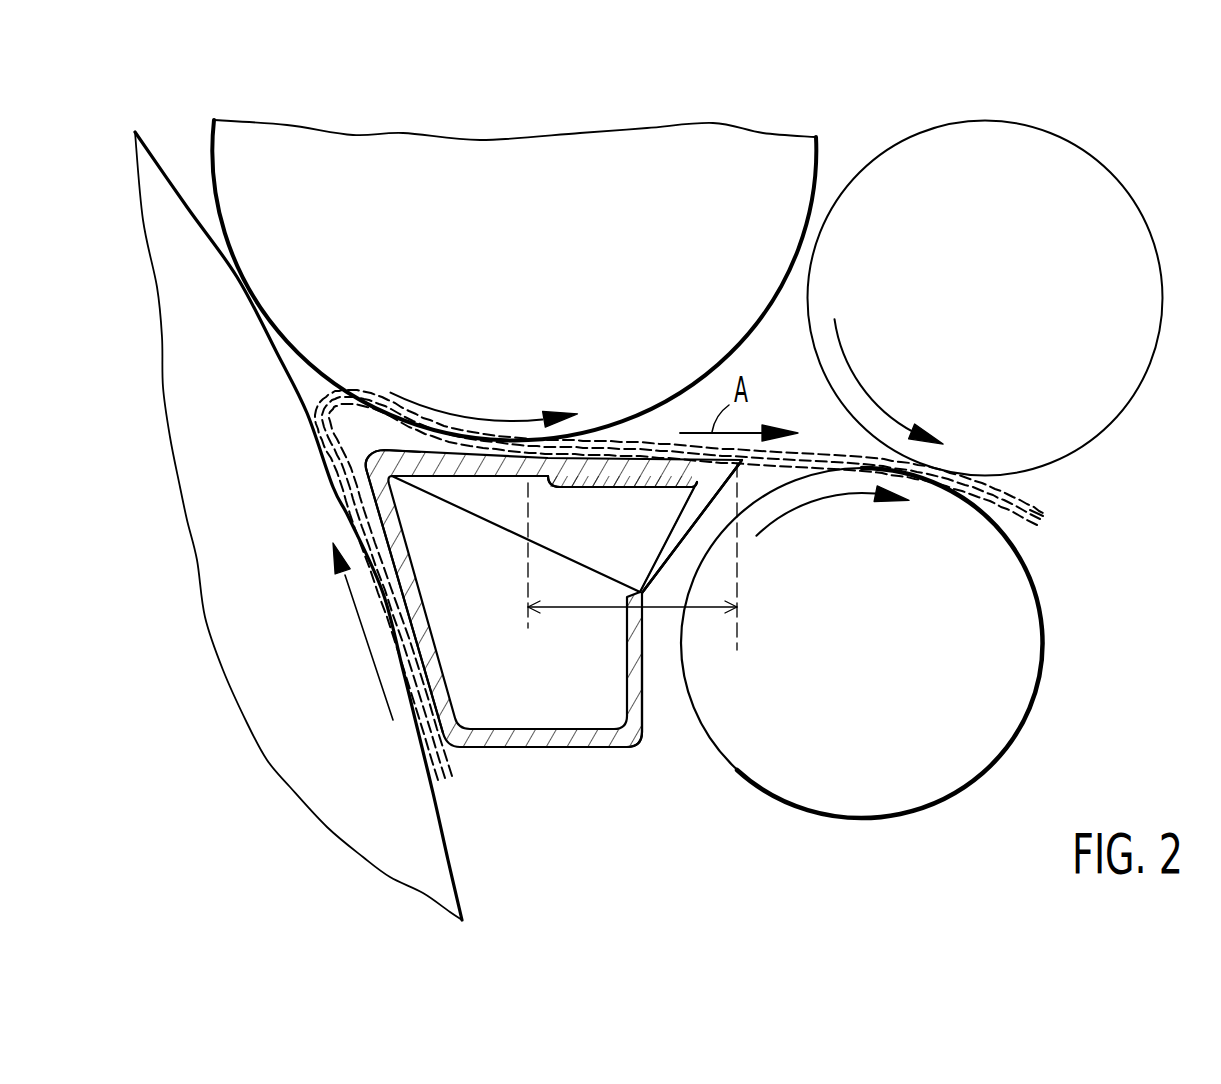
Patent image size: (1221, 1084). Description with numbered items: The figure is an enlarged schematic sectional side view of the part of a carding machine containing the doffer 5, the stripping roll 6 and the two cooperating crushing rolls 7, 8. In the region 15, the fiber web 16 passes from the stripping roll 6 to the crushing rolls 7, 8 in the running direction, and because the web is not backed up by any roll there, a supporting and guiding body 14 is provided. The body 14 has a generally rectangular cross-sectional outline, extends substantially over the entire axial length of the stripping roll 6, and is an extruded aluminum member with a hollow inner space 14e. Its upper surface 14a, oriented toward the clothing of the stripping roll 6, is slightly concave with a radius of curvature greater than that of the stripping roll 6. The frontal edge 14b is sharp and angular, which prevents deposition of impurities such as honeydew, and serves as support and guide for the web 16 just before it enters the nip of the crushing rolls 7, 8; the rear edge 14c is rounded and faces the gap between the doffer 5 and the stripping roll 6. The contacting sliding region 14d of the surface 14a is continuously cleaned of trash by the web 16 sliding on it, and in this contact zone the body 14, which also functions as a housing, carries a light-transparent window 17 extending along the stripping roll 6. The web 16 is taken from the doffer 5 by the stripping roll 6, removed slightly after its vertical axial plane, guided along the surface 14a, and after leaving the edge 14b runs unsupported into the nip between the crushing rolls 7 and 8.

The doffer 5 is at (290, 745).
The stripping roll 6 is at (314, 160).
The crushing roll 7 is at (1037, 160).
The crushing roll 8 is at (1007, 657).
The supporting and guiding body 14 is at (545, 750).
The upper surface 14a is at (397, 447).
The frontal edge 14b is at (745, 460).
The rear edge 14c is at (347, 463).
The contacting sliding region 14d is at (567, 601).
The hollow inner space 14e is at (596, 698).
The region 15 is at (788, 375).
The fiber web 16 is at (1027, 503).
The light-transparent window 17 is at (610, 488).